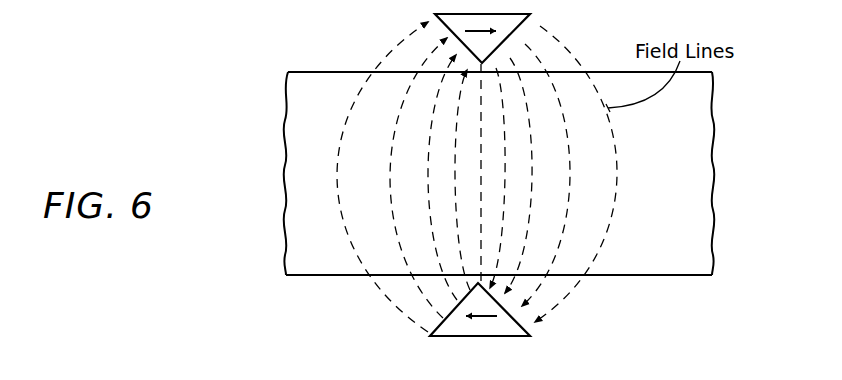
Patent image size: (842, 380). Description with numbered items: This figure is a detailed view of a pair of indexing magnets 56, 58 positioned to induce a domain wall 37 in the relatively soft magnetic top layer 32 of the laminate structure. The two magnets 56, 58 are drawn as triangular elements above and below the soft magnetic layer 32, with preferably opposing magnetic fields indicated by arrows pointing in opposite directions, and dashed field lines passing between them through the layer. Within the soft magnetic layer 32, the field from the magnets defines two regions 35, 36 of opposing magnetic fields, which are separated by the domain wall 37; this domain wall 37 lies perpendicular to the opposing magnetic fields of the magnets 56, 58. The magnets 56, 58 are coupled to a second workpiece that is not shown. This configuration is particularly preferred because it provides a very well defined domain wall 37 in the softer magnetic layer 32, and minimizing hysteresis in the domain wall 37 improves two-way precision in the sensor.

The soft magnetic top layer 32 is at (330, 259).
The region of opposing magnetic field 35 is at (322, 189).
The region of opposing magnetic field 36 is at (690, 191).
The domain wall 37 is at (480, 148).
The indexing magnet 56 is at (532, 14).
The indexing magnet 58 is at (530, 336).